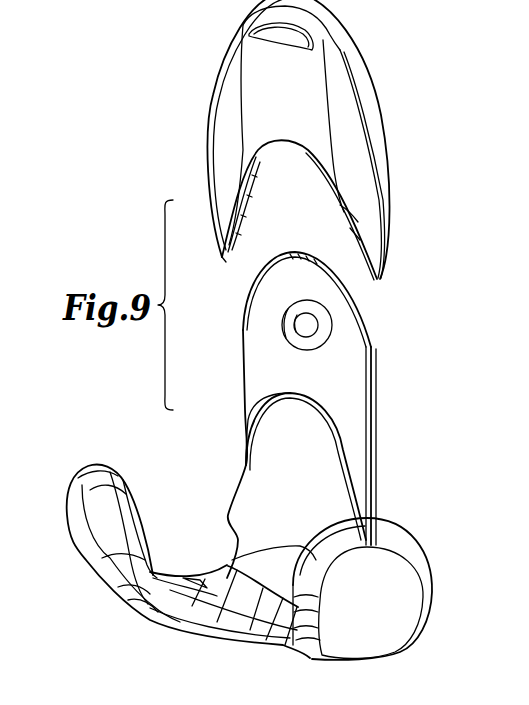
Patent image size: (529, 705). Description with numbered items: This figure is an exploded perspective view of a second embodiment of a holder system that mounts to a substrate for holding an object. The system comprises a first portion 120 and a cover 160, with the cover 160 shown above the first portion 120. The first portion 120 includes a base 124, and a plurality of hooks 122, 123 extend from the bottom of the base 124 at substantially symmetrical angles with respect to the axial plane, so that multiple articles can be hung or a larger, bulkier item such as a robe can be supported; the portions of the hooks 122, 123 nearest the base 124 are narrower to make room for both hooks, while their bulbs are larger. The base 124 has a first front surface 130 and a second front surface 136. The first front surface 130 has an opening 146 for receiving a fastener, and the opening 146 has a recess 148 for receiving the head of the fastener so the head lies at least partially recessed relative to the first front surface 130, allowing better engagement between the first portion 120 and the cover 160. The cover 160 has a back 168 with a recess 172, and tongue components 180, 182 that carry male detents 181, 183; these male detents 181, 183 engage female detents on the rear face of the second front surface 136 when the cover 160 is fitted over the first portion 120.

The first portion 120 is at (270, 473).
The hook 122 is at (92, 553).
The hook 123 is at (384, 600).
The base 124 is at (226, 590).
The first front surface 130 is at (323, 415).
The second front surface 136 is at (330, 475).
The opening 146 is at (298, 323).
The recess 148 is at (300, 343).
The cover 160 is at (277, 140).
The back 168 is at (368, 36).
The recess 172 is at (287, 152).
The tongue component 180 is at (224, 258).
The male detent 181 is at (248, 187).
The tongue component 182 is at (347, 230).
The male detent 183 is at (340, 208).